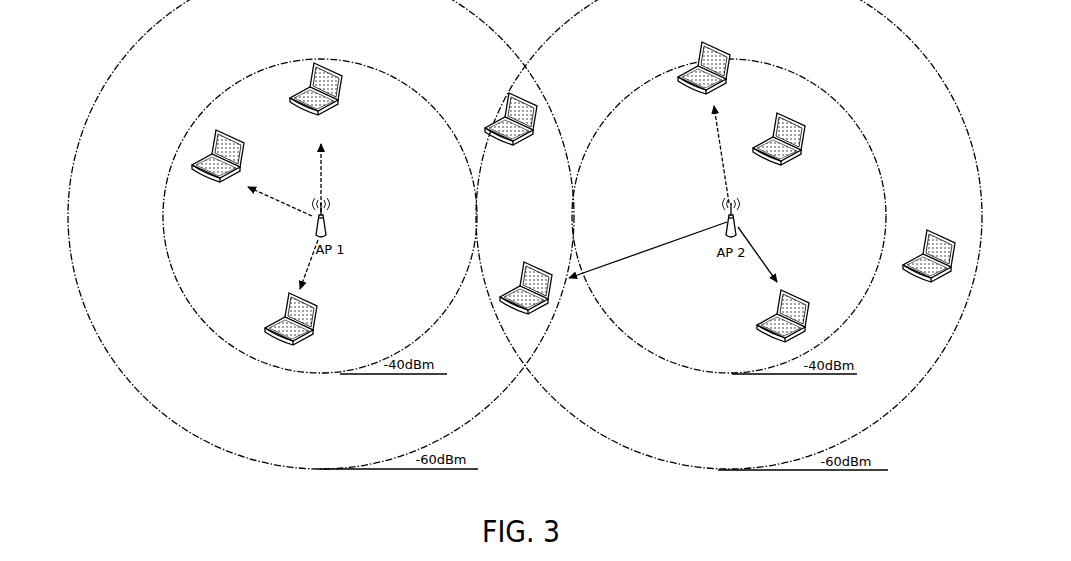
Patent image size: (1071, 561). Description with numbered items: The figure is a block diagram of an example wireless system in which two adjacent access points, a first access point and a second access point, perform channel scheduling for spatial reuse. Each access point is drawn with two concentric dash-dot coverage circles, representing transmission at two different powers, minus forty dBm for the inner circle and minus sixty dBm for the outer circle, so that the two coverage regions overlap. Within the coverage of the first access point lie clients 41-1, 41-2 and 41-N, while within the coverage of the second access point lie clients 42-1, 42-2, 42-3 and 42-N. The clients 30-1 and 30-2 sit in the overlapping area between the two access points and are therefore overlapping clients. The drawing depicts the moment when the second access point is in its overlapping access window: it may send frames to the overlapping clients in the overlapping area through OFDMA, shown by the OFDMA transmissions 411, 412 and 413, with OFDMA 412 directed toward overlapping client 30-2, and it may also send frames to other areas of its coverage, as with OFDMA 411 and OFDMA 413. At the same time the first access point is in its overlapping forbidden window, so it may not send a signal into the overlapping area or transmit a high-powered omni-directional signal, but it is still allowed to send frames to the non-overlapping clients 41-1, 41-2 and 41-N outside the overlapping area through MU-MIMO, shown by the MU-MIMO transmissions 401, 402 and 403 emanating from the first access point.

The client 41-1 is at (316, 101).
The client 41-2 is at (218, 167).
The client 41-N is at (291, 329).
The client 42-1 is at (695, 78).
The client 42-2 is at (779, 151).
The client 42-3 is at (929, 267).
The client 42-N is at (783, 325).
The overlapping client 30-1 is at (511, 130).
The overlapping client 30-2 is at (526, 298).
The MU-MIMO transmission 401 is at (356, 178).
The MU-MIMO transmission 402 is at (273, 209).
The MU-MIMO transmission 403 is at (338, 264).
The OFDMA transmission 411 is at (697, 154).
The OFDMA transmission 412 is at (648, 249).
The OFDMA transmission 413 is at (772, 254).